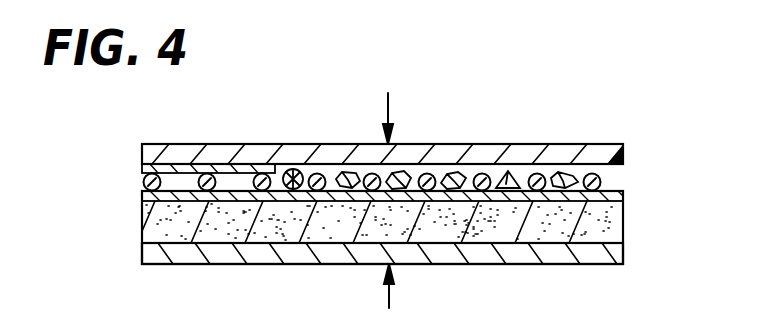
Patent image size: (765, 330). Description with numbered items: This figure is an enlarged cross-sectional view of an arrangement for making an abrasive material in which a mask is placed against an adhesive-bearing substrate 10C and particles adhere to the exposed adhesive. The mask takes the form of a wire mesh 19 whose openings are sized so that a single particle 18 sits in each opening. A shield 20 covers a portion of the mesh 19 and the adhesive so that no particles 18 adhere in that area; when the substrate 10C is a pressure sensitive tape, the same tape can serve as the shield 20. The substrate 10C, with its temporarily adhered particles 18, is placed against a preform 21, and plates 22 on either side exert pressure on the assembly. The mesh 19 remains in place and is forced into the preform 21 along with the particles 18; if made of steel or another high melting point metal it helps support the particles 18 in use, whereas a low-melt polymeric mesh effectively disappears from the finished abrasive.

The substrate 10C is at (623, 193).
The particle 18 is at (353, 167).
The wire mesh 19 is at (535, 174).
The shield 20 is at (242, 170).
The preform 21 is at (623, 229).
The plates 22 is at (425, 150).